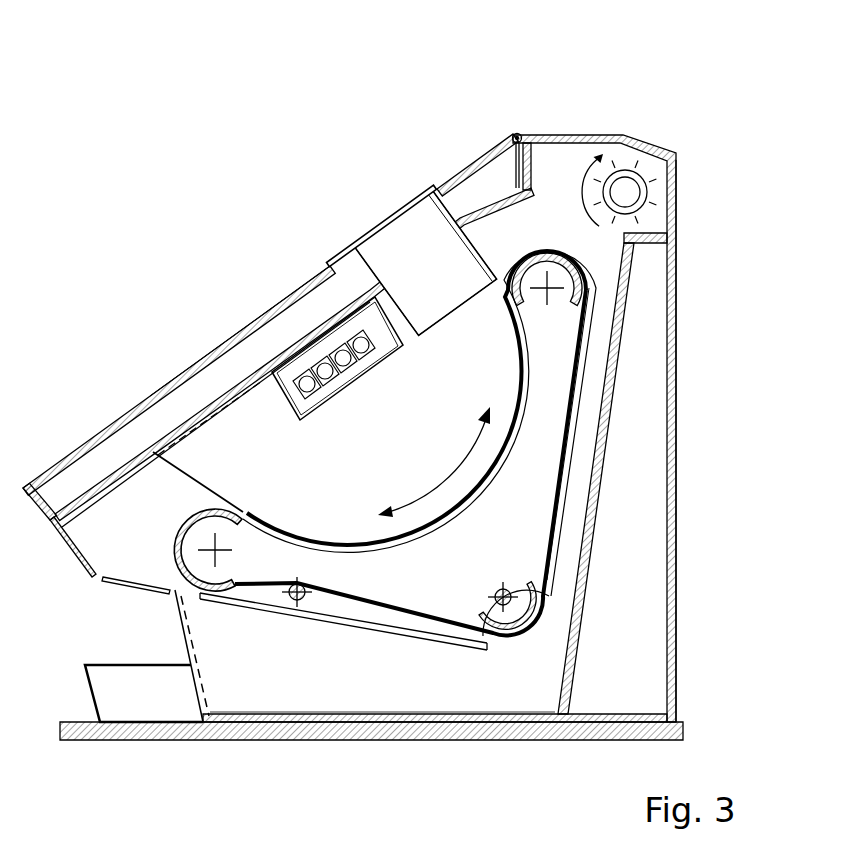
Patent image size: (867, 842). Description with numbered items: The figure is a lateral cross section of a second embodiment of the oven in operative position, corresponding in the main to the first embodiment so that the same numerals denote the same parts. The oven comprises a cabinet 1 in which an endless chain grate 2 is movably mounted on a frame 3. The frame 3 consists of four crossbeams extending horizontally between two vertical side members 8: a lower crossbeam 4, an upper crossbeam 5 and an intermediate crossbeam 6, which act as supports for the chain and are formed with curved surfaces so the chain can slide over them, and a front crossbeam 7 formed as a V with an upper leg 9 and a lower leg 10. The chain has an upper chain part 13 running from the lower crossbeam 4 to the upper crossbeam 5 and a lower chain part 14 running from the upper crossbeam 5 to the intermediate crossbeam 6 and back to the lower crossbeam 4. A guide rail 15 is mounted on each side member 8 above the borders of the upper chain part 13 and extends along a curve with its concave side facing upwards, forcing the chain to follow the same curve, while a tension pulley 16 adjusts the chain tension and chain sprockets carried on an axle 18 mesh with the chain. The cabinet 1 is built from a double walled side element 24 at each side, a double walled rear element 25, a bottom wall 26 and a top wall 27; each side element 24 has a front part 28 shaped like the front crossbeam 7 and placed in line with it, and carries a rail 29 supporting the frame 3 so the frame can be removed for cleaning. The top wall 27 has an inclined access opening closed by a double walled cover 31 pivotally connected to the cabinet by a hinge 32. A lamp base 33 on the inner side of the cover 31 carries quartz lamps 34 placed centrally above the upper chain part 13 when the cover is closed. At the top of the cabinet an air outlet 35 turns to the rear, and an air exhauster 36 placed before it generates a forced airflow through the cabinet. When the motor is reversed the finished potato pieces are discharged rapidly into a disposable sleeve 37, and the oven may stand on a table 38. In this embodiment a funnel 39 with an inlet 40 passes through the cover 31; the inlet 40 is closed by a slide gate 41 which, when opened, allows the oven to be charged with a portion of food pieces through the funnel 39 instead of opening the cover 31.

The cabinet 1 is at (625, 118).
The endless chain grate 2 is at (510, 412).
The frame 3 is at (190, 496).
The lower crossbeam 4 is at (174, 548).
The upper crossbeam 5 is at (543, 247).
The intermediate crossbeam 6 is at (503, 643).
The front crossbeam 7 is at (38, 476).
The side members 8 is at (133, 584).
The upper leg 9 is at (63, 494).
The lower leg 10 is at (70, 557).
The upper chain part 13 is at (490, 484).
The lower chain part 14 is at (417, 610).
The guide rail 15 is at (444, 492).
The tension pulley 16 is at (292, 604).
The axle 18 is at (503, 585).
The double walled side element 24 is at (470, 698).
The double walled rear element 25 is at (640, 575).
The bottom wall 26 is at (408, 705).
The top wall 27 is at (568, 135).
The front part 28 is at (144, 445).
The rail 29 is at (383, 633).
The double walled cover 31 is at (230, 338).
The hinge 32 is at (517, 132).
The lamp base 33 is at (400, 333).
The quartz lamps 34 is at (363, 347).
The air outlet 35 is at (676, 206).
The air exhauster 36 is at (632, 188).
The disposable sleeve 37 is at (88, 680).
The table 38 is at (235, 741).
The funnel 39 is at (435, 303).
The inlet 40 is at (427, 228).
The slide gate 41 is at (365, 230).